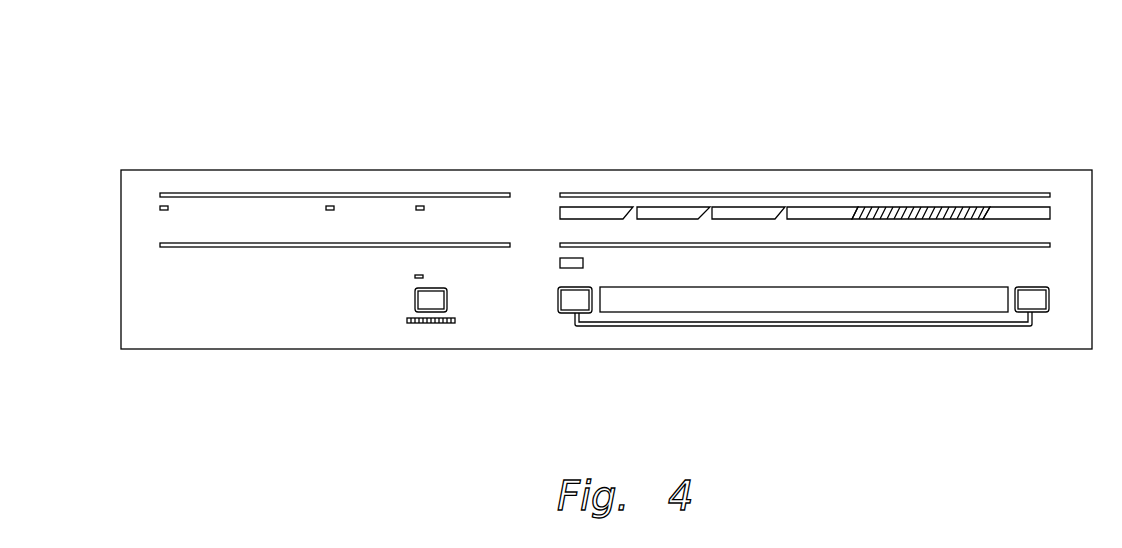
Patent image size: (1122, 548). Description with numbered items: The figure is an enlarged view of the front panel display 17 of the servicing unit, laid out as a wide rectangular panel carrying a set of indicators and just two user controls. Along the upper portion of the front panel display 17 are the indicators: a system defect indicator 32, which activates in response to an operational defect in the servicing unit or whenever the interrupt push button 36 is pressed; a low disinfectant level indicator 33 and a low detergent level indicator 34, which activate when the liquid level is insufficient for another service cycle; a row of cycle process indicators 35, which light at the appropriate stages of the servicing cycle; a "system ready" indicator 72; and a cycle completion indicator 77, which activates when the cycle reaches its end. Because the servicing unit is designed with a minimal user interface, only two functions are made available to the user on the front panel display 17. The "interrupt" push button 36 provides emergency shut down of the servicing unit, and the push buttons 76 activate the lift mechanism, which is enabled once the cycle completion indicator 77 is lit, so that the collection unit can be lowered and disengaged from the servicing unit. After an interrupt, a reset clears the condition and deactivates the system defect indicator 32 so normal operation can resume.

The front panel display 17 is at (672, 155).
The system defect indicator 32 is at (163, 207).
The low disinfectant level indicator 33 is at (418, 207).
The low detergent level indicator 34 is at (327, 207).
The cycle process indicators 35 is at (598, 212).
The interrupt push button 36 is at (413, 295).
The system ready indicator 72 is at (558, 259).
The push buttons 76 is at (556, 298).
The cycle completion indicator 77 is at (1017, 212).